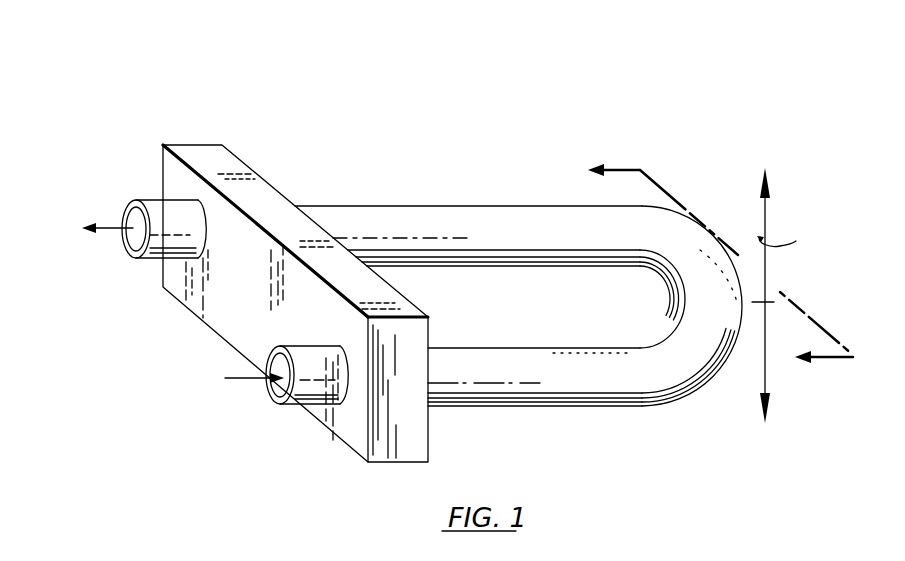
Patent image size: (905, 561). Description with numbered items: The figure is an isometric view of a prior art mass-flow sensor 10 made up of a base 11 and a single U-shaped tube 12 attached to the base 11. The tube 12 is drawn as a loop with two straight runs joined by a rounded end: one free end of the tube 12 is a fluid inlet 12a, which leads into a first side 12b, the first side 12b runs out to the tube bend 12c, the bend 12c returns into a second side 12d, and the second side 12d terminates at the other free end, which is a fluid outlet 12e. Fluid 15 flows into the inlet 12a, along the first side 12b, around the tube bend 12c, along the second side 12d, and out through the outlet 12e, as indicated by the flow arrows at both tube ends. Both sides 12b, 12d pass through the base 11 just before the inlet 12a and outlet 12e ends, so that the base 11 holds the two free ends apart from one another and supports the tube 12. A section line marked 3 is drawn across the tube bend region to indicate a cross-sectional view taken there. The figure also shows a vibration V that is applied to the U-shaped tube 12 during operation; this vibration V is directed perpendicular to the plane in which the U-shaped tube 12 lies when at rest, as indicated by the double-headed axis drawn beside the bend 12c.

The mass-flow sensor 10 is at (172, 84).
The base 11 is at (228, 160).
The U-shaped tube 12 is at (416, 184).
The fluid inlet 12a is at (322, 383).
The first side 12b is at (618, 388).
The tube bend 12c is at (683, 290).
The second side 12d is at (538, 215).
The fluid outlet 12e is at (157, 208).
The fluid 15 is at (170, 306).
The section line for FIG. 3 is at (720, 264).
The vibration V is at (781, 295).